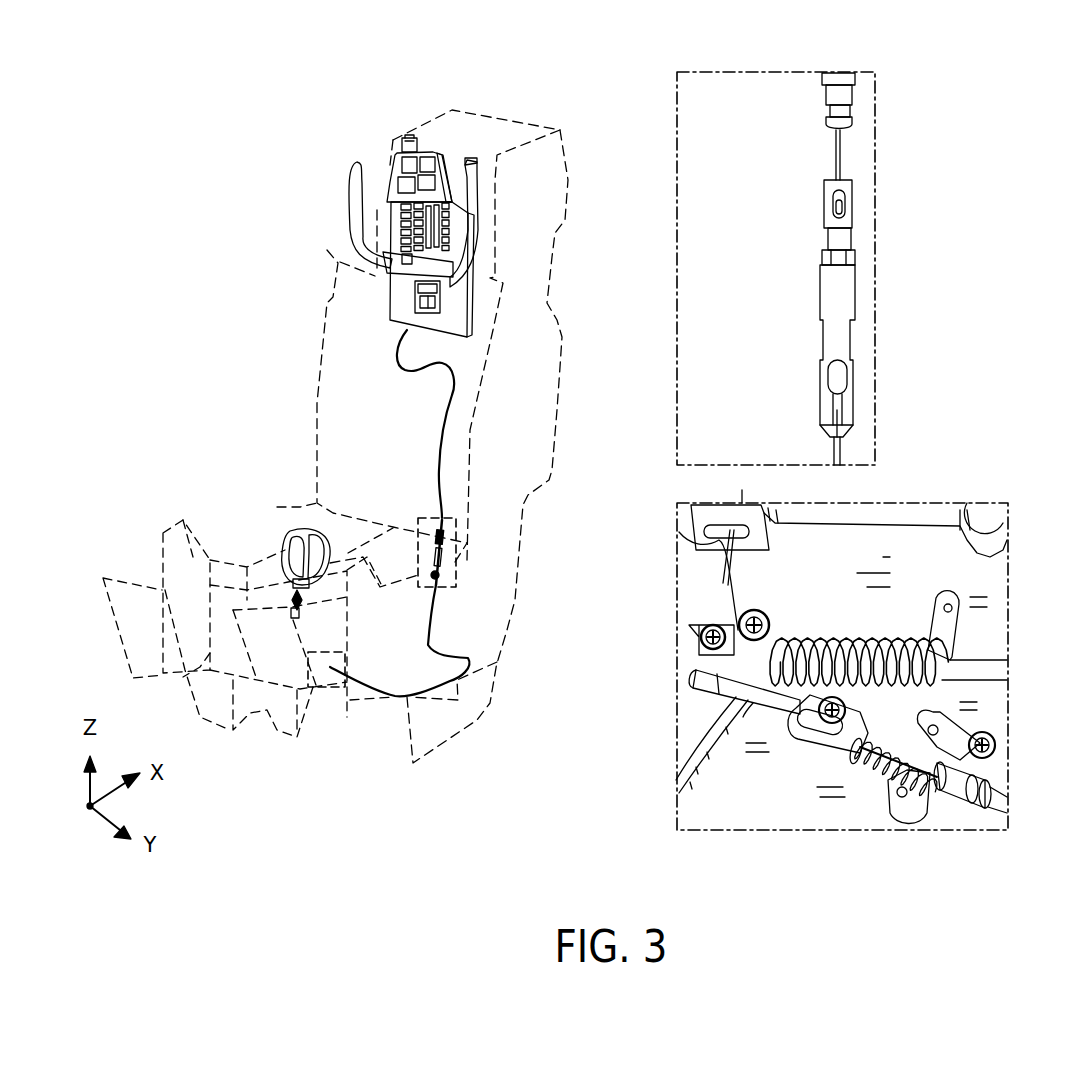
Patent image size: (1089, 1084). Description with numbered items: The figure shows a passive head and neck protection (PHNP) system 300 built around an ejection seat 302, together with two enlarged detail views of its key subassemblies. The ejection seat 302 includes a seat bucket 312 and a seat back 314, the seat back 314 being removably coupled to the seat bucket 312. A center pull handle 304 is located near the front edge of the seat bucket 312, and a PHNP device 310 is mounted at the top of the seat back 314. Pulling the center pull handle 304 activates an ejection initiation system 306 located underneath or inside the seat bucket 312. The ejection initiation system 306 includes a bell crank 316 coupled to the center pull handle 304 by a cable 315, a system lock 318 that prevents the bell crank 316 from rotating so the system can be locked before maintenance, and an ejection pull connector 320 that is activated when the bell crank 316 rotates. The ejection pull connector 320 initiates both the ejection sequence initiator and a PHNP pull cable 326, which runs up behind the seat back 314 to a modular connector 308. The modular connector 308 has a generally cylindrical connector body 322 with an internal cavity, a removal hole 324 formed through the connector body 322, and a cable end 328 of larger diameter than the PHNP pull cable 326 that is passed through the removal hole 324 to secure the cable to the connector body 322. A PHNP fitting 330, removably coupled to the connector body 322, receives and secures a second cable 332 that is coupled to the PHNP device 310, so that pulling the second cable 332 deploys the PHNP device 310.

The passive head and neck protection (PHNP) system 300 is at (192, 222).
The ejection seat 302 is at (192, 440).
The center pull handle 304 is at (300, 530).
The ejection initiation system 306 is at (330, 668).
The modular connector 308 is at (457, 568).
The PHNP device 310 is at (368, 122).
The seat bucket 312 is at (225, 548).
The seat back 314 is at (325, 372).
The cable 315 is at (703, 547).
The bell crank 316 is at (693, 733).
The system lock 318 is at (940, 640).
The ejection pull connector 320 is at (763, 698).
The connector body 322 is at (821, 297).
The removal hole 324 is at (843, 377).
The PHNP pull cable 326 is at (390, 693).
The cable end 328 is at (815, 408).
The PHNP fitting 330 is at (833, 240).
The second cable 332 is at (840, 153).